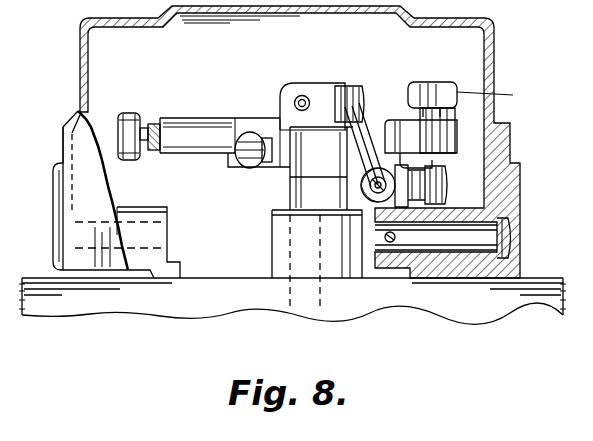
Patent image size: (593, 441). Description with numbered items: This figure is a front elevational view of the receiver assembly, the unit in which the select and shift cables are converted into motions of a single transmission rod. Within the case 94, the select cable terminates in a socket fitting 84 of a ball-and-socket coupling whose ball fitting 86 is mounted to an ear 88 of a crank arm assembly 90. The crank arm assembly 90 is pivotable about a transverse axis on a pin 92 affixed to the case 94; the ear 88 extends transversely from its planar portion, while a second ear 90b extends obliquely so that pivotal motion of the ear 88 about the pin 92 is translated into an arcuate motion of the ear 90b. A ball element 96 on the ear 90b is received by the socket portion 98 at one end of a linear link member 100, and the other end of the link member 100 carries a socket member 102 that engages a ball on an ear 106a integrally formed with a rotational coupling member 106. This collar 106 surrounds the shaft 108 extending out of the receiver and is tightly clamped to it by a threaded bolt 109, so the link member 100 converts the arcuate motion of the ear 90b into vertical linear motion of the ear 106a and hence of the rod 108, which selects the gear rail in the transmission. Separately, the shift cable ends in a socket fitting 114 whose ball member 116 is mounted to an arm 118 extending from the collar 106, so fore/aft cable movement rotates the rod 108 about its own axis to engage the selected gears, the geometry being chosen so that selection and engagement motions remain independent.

The socket fitting 84 is at (458, 92).
The ball fitting 86 is at (436, 82).
The ear 88 is at (453, 128).
The crank arm assembly 90 is at (400, 130).
The second ear 90b is at (422, 185).
The pin 92 is at (505, 238).
The case 94 is at (497, 42).
The ball element 96 is at (357, 203).
The socket portion 98 is at (430, 165).
The link member 100 is at (357, 127).
The socket member 102 is at (340, 86).
The rotational coupling member 106 is at (280, 120).
The ear 106a is at (302, 94).
The shaft 108 is at (300, 188).
The threaded bolt 109 is at (237, 167).
The socket fitting 114 is at (130, 117).
The ball member 116 is at (125, 135).
The arm 118 is at (170, 158).